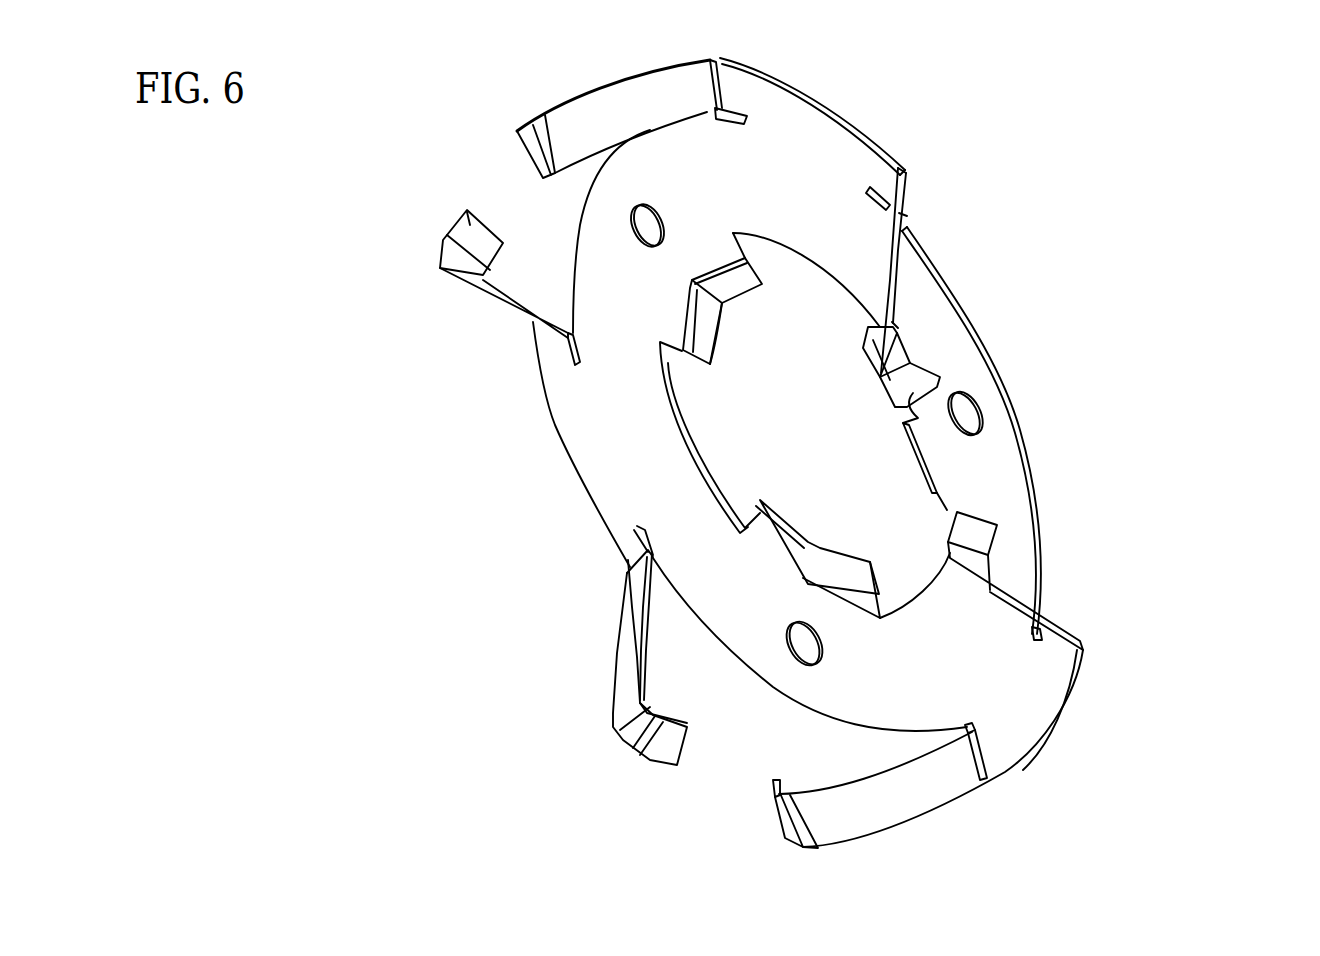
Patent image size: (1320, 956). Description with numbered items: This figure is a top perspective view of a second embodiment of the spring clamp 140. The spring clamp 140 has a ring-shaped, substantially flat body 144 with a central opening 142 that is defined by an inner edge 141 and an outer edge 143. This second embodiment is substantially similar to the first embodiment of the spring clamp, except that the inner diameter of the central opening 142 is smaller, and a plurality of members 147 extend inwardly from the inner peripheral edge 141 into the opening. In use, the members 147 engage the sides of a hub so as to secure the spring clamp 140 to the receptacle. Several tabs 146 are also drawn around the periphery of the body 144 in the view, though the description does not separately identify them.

The spring clamp 140 is at (1138, 213).
The inner edge 141 is at (678, 387).
The central opening 142 is at (740, 450).
The outer edge 143 is at (780, 80).
The body 144 is at (777, 183).
The tabs 146 is at (520, 150).
The members 147 is at (743, 292).